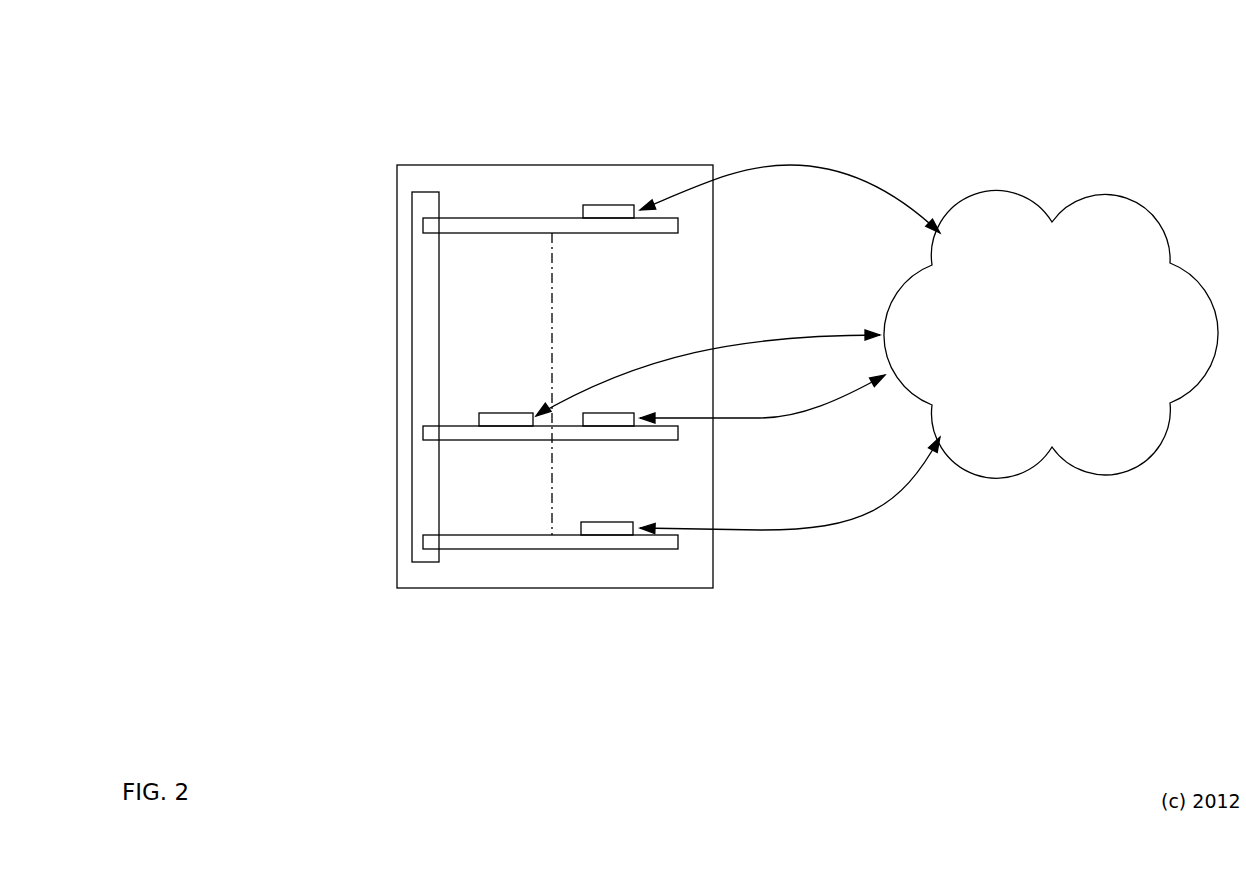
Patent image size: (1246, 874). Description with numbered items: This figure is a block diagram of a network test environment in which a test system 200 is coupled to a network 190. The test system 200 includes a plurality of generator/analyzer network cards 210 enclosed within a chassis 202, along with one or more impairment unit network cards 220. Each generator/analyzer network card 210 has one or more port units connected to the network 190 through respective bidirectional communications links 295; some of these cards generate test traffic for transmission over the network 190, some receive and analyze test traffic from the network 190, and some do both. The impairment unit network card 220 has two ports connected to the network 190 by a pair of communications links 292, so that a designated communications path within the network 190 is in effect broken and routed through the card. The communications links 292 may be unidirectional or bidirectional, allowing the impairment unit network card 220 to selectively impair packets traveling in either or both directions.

The test system 200 is at (465, 88).
The chassis 202 is at (613, 165).
The generator/analyzer network card 210 is at (465, 217).
The impairment unit network card 220 is at (465, 425).
The network 190 is at (1051, 335).
The communications links 292 is at (777, 415).
The bidirectional communications links 295 is at (843, 168).